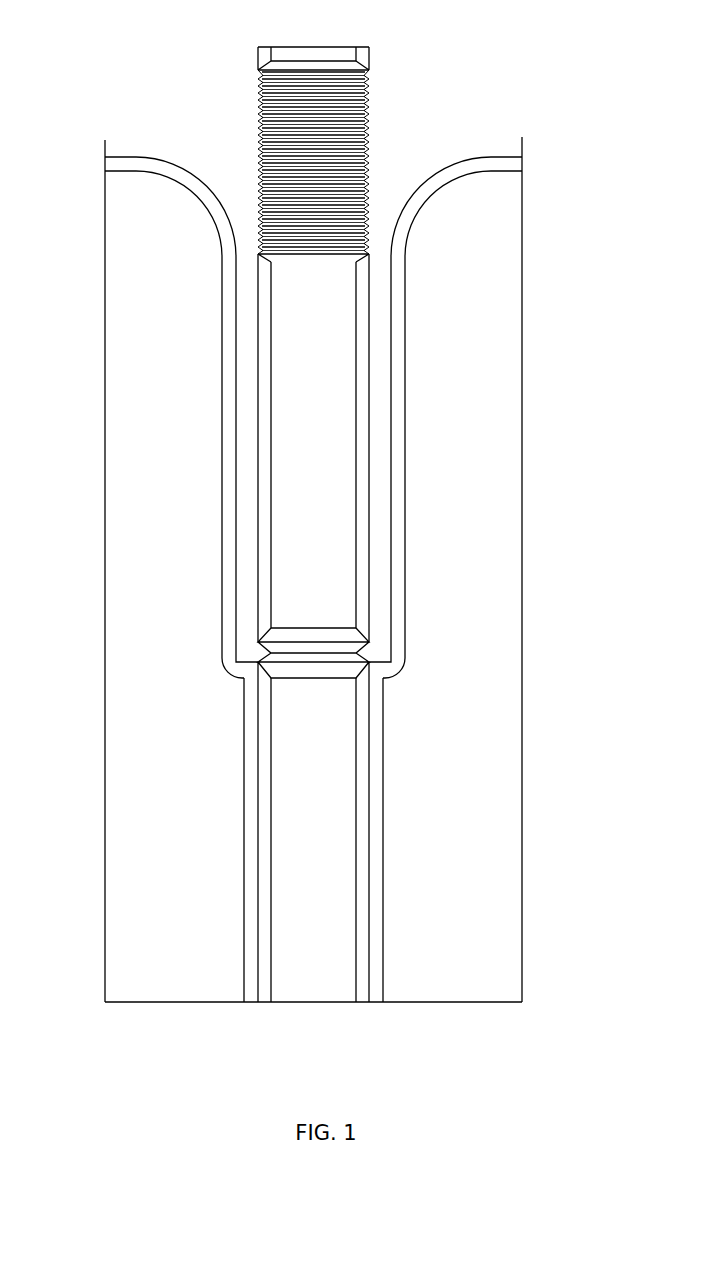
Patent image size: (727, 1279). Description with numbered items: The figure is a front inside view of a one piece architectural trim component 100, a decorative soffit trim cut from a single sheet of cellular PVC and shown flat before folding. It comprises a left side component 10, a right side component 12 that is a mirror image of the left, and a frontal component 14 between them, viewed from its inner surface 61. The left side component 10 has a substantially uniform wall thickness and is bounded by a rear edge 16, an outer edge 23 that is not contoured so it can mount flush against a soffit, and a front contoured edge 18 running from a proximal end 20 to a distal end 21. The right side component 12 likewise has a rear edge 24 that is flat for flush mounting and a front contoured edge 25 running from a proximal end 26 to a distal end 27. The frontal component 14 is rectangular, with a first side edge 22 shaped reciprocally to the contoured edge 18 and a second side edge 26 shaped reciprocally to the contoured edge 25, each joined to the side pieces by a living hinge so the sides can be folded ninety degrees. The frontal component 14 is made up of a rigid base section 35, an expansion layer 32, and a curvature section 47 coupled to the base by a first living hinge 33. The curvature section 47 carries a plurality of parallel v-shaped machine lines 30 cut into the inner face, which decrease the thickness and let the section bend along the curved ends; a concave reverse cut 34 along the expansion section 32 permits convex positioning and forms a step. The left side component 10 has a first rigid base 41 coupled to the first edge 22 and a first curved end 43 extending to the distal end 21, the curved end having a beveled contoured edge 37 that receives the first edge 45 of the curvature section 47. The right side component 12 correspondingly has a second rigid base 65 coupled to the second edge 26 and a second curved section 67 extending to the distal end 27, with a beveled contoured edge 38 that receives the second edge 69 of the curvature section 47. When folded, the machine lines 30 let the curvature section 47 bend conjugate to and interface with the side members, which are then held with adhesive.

The architectural trim component 100 is at (312, 1002).
The left side component 10 is at (143, 983).
The right side component 12 is at (483, 983).
The frontal component 14 is at (278, 1002).
The rear edge 16 is at (244, 963).
The front contoured edge 18 is at (258, 915).
The proximal end 20 is at (187, 1002).
The distal end 21 is at (105, 158).
The contoured edge 22 is at (258, 893).
The outer edge 23 is at (105, 852).
The rear edge 24 is at (522, 852).
The front contoured edge 25 is at (369, 915).
The second side edge 26 is at (369, 861).
The distal end 27 is at (522, 158).
The machine lines 30 is at (369, 171).
The expansion layer 32 is at (292, 582).
The first living hinge 33 is at (178, 214).
The reverse cut 34 is at (369, 642).
The base section 35 is at (323, 983).
The contoured edge 37 is at (190, 187).
The contoured edge 38 is at (437, 187).
The first rigid base 41 is at (125, 803).
The first curved end 43 is at (126, 283).
The first edge 45 is at (258, 85).
The curvature section 47 is at (313, 62).
The inner surface 61 is at (328, 840).
The second rigid base 65 is at (500, 803).
The second curved section 67 is at (500, 283).
The second edge 69 is at (369, 85).